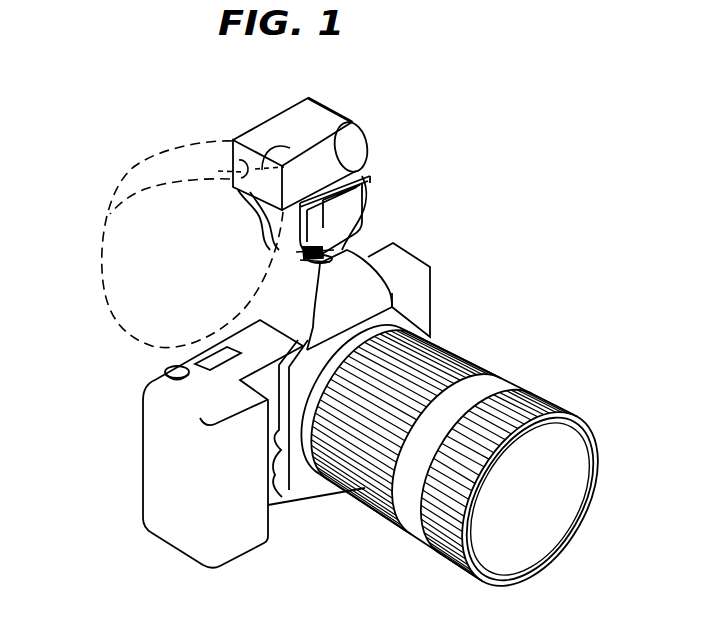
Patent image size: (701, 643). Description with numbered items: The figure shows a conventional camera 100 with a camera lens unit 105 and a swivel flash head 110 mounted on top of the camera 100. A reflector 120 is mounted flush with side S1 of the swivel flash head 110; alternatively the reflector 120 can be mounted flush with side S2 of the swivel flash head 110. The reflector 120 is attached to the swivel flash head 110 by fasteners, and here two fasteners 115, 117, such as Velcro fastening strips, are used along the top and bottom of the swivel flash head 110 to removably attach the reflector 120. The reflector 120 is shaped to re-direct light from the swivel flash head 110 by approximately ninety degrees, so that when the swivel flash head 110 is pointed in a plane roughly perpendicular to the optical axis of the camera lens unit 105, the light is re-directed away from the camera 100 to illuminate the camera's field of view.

The camera 100 is at (182, 469).
The camera lens unit 105 is at (557, 403).
The swivel flash head 110 is at (360, 143).
The fastener 115 is at (250, 135).
The fastener 117 is at (268, 240).
The reflector 120 is at (150, 165).
The side of the swivel flash head S1 is at (228, 173).
The side of the swivel flash head S2 is at (280, 150).